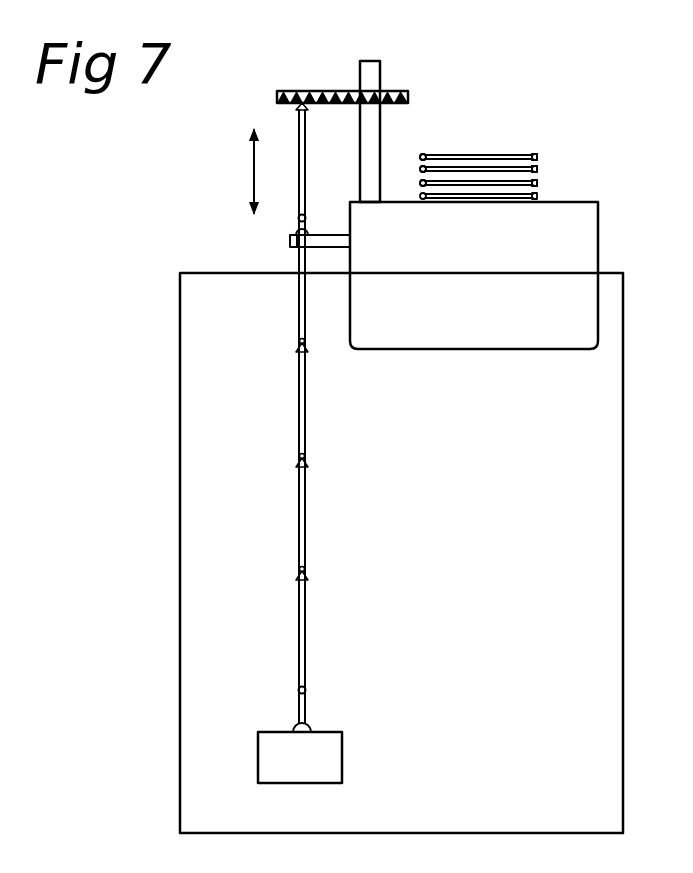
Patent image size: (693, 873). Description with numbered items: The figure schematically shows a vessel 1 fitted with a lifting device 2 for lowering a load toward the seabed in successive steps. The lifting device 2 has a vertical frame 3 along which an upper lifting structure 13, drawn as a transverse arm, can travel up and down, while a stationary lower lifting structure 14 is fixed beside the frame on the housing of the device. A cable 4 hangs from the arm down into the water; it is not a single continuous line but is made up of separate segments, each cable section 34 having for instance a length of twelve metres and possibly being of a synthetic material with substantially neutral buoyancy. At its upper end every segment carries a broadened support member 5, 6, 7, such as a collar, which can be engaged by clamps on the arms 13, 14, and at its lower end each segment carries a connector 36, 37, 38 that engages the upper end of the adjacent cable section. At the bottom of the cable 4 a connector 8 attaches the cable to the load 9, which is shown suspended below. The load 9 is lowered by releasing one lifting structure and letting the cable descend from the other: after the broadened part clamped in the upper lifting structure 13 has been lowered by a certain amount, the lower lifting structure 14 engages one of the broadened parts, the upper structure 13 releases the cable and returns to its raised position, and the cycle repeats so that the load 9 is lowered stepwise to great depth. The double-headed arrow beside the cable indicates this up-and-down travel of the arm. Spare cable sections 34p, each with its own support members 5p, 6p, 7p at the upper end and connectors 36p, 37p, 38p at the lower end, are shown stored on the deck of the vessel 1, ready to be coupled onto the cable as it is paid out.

The vessel 1 is at (582, 222).
The lifting device 2 is at (420, 102).
The vertical frame 3 is at (368, 150).
The cable 4 is at (305, 507).
The broadened support member 5 is at (298, 110).
The broadened support member 6 is at (298, 467).
The broadened support member 7 is at (298, 580).
The connector 8 is at (308, 726).
The load 9 is at (335, 775).
The upper lifting structure 13 is at (293, 93).
The stationary lower lifting structure 14 is at (290, 241).
The cable section 34 is at (298, 170).
The connector 36 is at (298, 218).
The connector 37 is at (299, 457).
The connector 38 is at (299, 570).
The stored cable section 34p is at (478, 157).
The connector of stored cable section 36p is at (423, 155).
The connector of stored cable section 37p is at (420, 169).
The connector of stored cable section 38p is at (420, 183).
The support member of stored cable section 5p is at (537, 157).
The support member of stored cable section 6p is at (538, 169).
The support member of stored cable section 7p is at (538, 183).